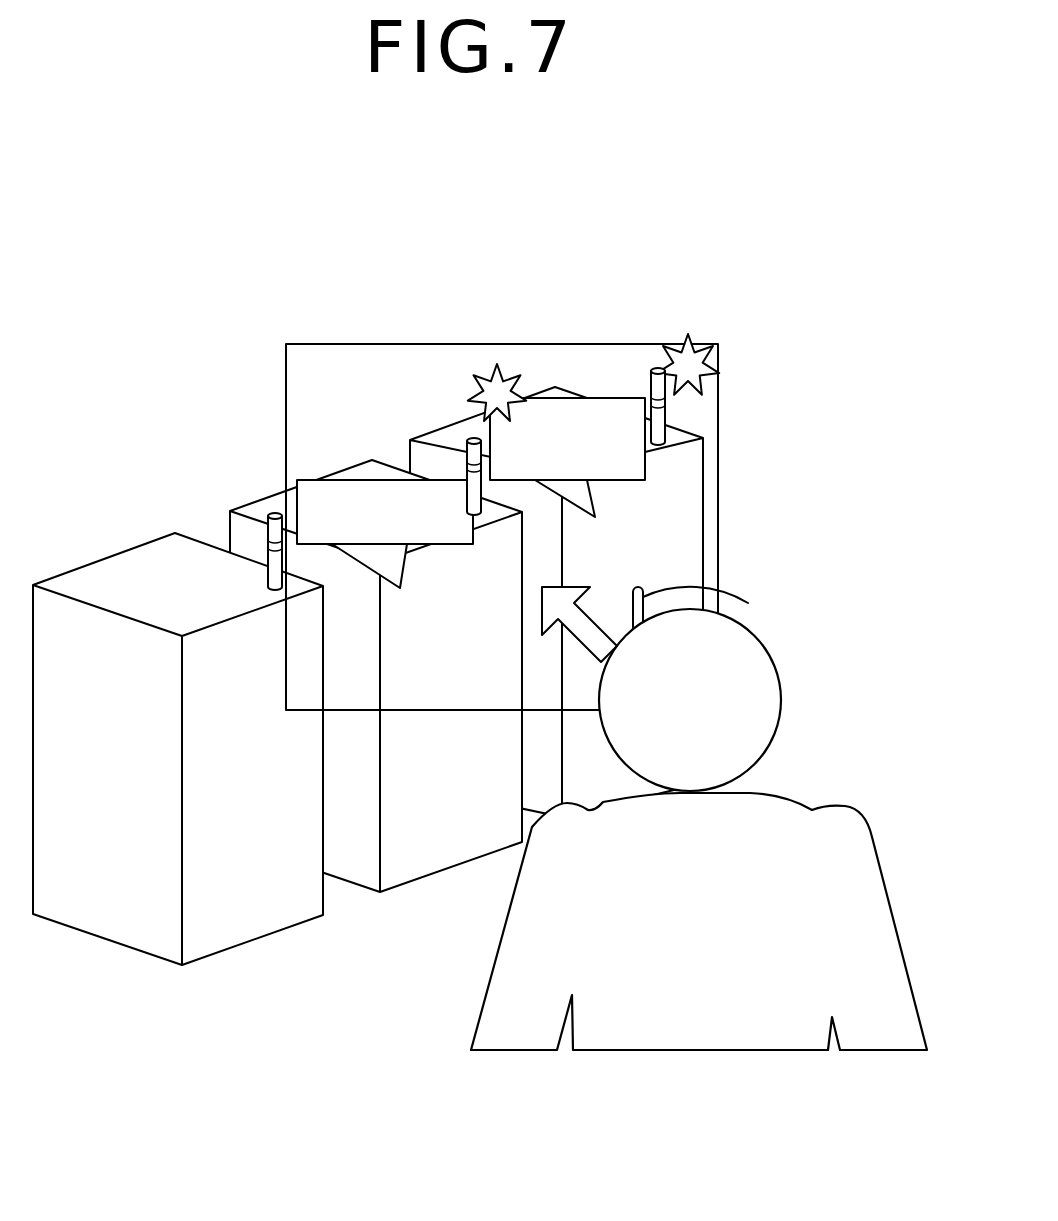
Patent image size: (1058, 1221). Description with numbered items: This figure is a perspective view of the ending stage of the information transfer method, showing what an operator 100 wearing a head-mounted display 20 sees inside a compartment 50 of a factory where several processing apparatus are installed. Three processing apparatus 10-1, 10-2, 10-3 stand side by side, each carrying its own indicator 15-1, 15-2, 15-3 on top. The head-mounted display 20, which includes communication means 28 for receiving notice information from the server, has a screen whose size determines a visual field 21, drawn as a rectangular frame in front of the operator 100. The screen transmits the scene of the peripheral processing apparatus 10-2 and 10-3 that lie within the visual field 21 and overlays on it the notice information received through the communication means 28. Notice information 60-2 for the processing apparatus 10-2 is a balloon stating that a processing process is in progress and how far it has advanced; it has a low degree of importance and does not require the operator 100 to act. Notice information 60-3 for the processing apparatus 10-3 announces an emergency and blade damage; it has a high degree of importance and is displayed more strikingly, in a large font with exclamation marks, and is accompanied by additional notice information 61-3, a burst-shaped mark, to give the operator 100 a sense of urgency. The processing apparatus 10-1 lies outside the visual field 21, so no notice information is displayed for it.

The compartment 50 is at (178, 427).
The processing apparatus 10-1 is at (101, 916).
The processing apparatus 10-2 is at (358, 885).
The processing apparatus 10-3 is at (693, 538).
The indicator 15-1 is at (268, 545).
The indicator 15-2 is at (467, 474).
The indicator 15-3 is at (652, 392).
The visual field 21 is at (718, 495).
The notice information 60-2 is at (348, 480).
The notice information 60-3 is at (607, 398).
The additional notice information 61-3 is at (495, 364).
The communication means 28 is at (720, 593).
The head-mounted display 20 is at (792, 645).
The operator 100 is at (873, 885).